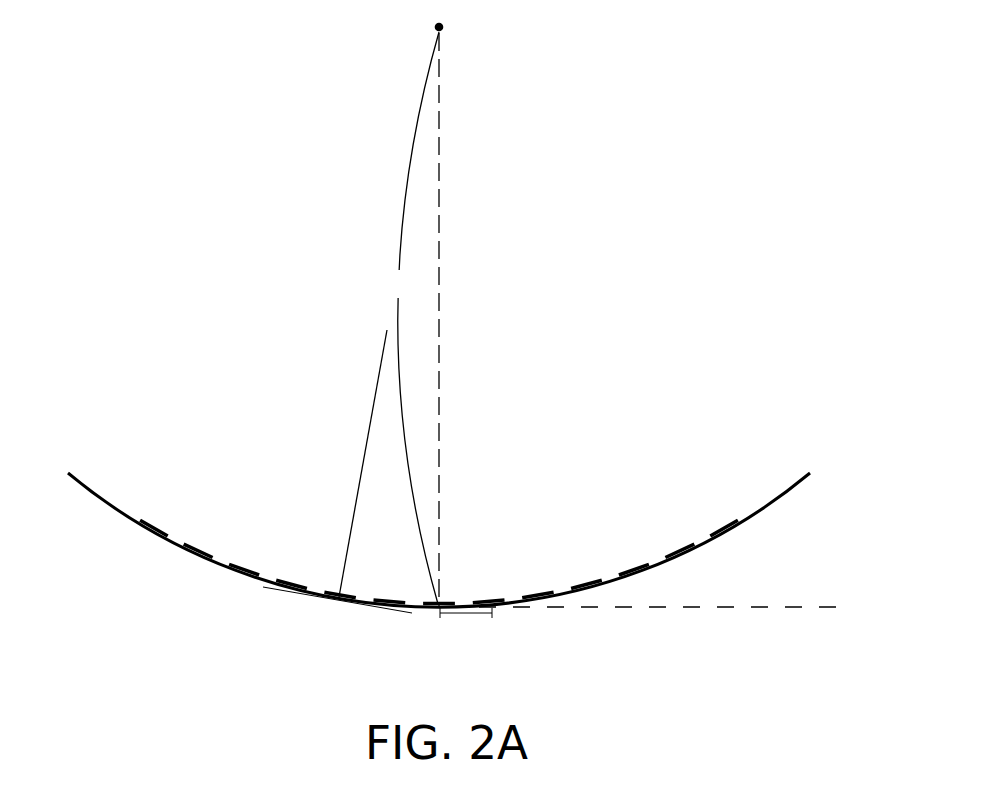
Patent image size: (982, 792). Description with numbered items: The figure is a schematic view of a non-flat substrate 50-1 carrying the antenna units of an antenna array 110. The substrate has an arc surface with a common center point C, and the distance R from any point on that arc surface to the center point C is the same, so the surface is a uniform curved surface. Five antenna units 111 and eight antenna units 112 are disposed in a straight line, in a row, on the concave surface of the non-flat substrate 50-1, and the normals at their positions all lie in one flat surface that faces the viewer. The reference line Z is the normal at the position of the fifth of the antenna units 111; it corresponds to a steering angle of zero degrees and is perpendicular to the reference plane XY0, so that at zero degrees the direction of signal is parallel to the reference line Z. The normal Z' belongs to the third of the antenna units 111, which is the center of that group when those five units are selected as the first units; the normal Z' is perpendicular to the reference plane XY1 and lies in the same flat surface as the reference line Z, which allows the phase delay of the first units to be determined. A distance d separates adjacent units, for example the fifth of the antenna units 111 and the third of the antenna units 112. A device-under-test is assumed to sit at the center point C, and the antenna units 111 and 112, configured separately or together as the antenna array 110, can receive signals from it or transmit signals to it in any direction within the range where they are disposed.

The non-flat substrate 50-1 is at (92, 488).
The antenna array 110 is at (173, 158).
The antenna units 111 is at (448, 600).
The antenna units 112 is at (608, 663).
The center point C is at (456, 19).
The distance R is at (414, 318).
The reference line Z is at (428, 419).
The normal Z' is at (363, 463).
The reference plane XY0 is at (666, 607).
The reference plane XY1 is at (343, 620).
The distance d is at (466, 625).